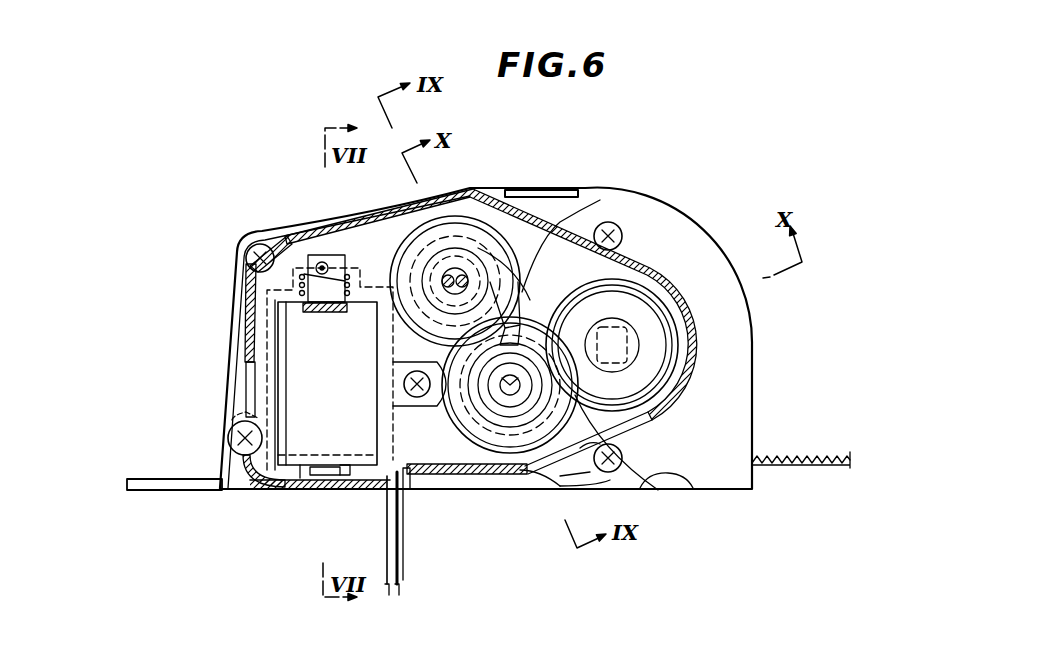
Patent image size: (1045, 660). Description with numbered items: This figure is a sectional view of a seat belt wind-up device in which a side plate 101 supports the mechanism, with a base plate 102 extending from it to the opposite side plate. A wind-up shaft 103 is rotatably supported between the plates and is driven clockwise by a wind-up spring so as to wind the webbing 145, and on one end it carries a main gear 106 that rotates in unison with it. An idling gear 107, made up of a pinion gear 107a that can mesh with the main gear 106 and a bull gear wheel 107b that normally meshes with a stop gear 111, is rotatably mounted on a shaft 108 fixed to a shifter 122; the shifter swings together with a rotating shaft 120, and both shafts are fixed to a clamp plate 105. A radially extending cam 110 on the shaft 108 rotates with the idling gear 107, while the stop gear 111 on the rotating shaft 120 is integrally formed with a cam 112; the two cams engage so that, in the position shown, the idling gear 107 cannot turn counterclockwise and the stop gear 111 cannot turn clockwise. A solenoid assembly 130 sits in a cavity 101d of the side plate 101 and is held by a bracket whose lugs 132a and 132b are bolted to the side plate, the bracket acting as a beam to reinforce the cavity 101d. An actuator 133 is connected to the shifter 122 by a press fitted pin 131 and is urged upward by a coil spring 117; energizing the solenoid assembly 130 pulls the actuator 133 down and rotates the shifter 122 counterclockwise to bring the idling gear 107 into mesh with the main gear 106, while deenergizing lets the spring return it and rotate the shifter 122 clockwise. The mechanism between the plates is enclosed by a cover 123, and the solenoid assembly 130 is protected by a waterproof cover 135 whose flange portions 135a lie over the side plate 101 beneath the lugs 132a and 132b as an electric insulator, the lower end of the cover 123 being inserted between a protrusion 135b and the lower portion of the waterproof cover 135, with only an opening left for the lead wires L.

The side plate 101 is at (728, 492).
The cavity 101d is at (325, 492).
The base plate 102 is at (166, 492).
The wind-up shaft 103 is at (622, 338).
The clamp plate 105 is at (600, 200).
The main gear 106 is at (650, 362).
The idling gear 107 is at (470, 410).
The pinion gear 107a is at (522, 428).
The bull gear wheel 107b is at (633, 457).
The shaft 108 is at (505, 396).
The cam 110 is at (622, 241).
The stop gear 111 is at (572, 191).
The cam 112 is at (505, 292).
The coil spring 117 is at (303, 296).
The rotating shaft 120 is at (520, 191).
The shifter 122 is at (348, 302).
The cover 123 is at (455, 266).
The solenoid assembly 130 is at (300, 466).
The press fitted pin 131 is at (325, 243).
The lug 132a is at (243, 398).
The lug 132b is at (397, 410).
The actuator 133 is at (322, 262).
The waterproof cover 135 is at (330, 262).
The flange portions 135a is at (350, 330).
The protrusion 135b is at (347, 473).
The webbing 145 is at (818, 456).
The lead wires L is at (402, 580).